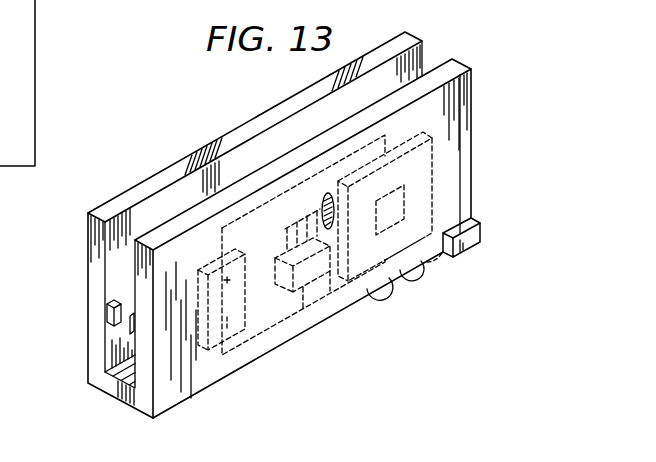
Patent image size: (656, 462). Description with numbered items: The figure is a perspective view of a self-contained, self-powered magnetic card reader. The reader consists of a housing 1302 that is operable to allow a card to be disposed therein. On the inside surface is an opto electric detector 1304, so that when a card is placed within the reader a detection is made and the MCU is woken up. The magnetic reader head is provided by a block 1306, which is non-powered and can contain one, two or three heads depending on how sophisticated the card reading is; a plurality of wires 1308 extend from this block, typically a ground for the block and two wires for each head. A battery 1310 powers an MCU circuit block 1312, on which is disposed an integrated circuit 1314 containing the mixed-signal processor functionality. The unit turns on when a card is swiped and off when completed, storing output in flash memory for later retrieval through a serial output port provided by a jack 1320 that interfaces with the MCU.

The housing 1302 is at (95, 352).
The opto electric detector 1304 is at (104, 317).
The magnetic head block 1306 is at (312, 272).
The wires 1308 is at (325, 199).
The battery 1310 is at (240, 315).
The MCU circuit block 1312 is at (425, 156).
The integrated circuit 1314 is at (443, 264).
The jack 1320 is at (480, 234).